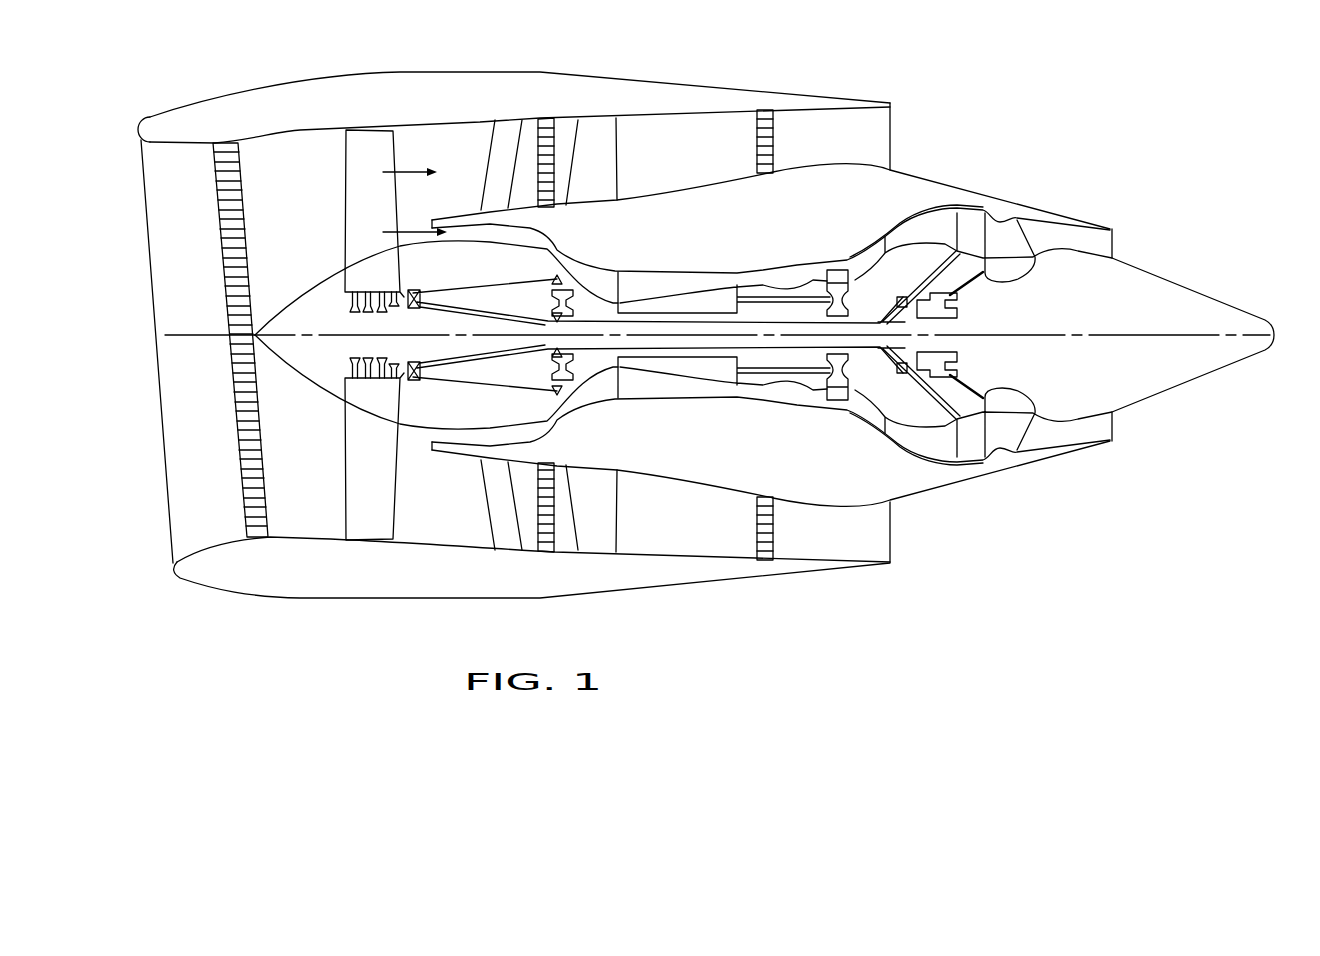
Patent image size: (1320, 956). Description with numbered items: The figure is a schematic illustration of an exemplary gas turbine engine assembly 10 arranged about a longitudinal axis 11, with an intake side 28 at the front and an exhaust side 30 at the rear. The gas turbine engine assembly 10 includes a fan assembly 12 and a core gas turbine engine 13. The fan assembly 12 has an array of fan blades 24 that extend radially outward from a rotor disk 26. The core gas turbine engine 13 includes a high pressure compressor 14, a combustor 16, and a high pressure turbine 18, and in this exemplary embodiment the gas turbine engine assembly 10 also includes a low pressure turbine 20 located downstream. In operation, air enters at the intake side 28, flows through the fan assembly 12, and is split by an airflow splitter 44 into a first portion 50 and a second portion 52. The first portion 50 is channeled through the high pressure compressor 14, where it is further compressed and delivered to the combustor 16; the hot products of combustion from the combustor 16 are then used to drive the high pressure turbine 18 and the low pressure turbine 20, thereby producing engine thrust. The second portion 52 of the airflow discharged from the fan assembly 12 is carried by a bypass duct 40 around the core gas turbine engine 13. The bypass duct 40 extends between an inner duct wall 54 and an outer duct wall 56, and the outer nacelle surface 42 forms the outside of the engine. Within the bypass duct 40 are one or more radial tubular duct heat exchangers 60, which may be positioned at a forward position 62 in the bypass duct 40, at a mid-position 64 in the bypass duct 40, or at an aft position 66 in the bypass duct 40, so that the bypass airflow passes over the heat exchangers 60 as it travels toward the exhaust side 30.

The gas turbine engine assembly 10 is at (1043, 107).
The longitudinal axis 11 is at (213, 340).
The fan assembly 12 is at (360, 480).
The core gas turbine engine 13 is at (1030, 192).
The high pressure compressor 14 is at (630, 282).
The combustor 16 is at (793, 277).
The high pressure turbine 18 is at (838, 395).
The low pressure turbine 20 is at (918, 228).
The fan blades 24 is at (363, 172).
The rotor disk 26 is at (370, 397).
The intake side 28 is at (170, 541).
The exhaust side 30 is at (915, 120).
The bypass duct 40 is at (683, 171).
The nacelle outer surface 42 is at (636, 72).
The airflow splitter 44 is at (778, 168).
The first portion 50 is at (413, 230).
The second portion 52 is at (407, 170).
The inner duct wall 54 is at (438, 219).
The outer duct wall 56 is at (463, 128).
The radial tubular duct heat exchangers 60 is at (233, 425).
The forward position 62 is at (227, 100).
The mid-position 64 is at (549, 100).
The aft position 66 is at (771, 85).